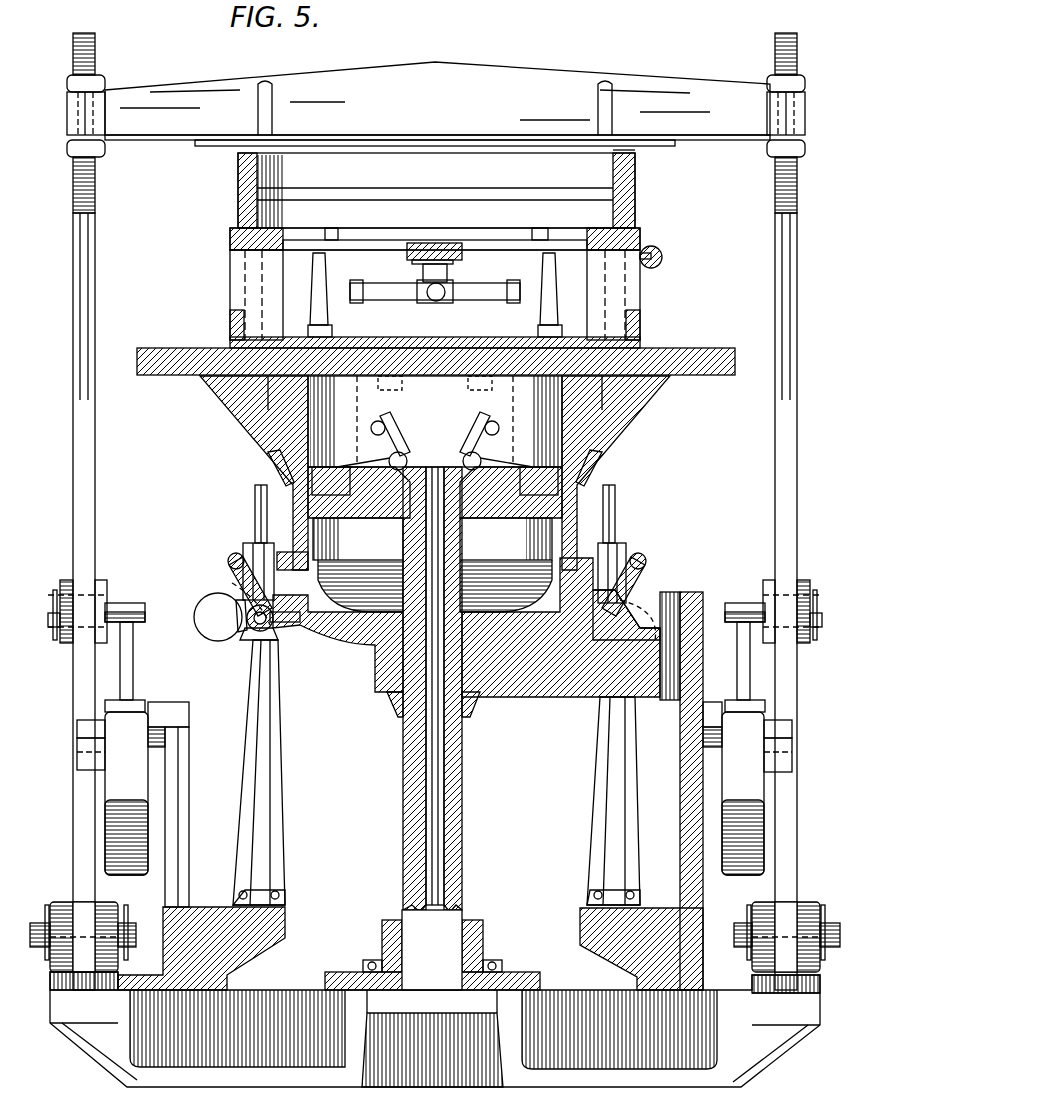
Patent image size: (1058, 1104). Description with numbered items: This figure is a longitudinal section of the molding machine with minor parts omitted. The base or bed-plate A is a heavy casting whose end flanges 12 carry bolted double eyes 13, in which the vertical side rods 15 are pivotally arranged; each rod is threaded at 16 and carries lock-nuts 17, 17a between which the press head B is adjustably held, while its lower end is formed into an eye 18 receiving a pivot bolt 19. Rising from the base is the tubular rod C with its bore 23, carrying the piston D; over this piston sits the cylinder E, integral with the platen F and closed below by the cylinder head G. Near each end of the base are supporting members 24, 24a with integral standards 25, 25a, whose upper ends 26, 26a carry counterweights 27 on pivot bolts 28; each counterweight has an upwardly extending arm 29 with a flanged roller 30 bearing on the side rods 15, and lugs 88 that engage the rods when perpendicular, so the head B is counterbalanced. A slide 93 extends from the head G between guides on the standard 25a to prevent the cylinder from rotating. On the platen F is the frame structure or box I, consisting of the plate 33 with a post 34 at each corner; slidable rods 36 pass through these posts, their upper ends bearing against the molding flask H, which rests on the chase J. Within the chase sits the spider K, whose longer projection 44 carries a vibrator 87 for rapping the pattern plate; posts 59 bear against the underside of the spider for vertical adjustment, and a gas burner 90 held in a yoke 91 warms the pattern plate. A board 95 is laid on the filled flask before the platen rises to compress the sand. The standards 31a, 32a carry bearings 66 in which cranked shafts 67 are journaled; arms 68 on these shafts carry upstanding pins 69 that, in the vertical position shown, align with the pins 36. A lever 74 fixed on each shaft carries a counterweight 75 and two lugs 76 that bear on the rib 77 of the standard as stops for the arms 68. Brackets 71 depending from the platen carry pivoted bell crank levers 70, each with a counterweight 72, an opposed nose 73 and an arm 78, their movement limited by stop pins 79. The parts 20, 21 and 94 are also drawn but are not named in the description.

The laterally projecting flanges 12 is at (50, 1012).
The double eyes 13 is at (58, 902).
The side rods 15 is at (97, 501).
The screw threaded portion 16 is at (99, 50).
The lock-nut 17 is at (107, 81).
The lock-nut 17a is at (108, 153).
The eyes 18 is at (88, 904).
The pivot bolts 19 is at (130, 920).
The pedestal block 20 is at (488, 943).
The bolt 21 is at (365, 964).
The bore 23 is at (432, 821).
The supporting member 24 is at (296, 915).
The supporting member 24a is at (578, 931).
The standard 25 is at (196, 787).
The standard 25a is at (680, 832).
The upper end of standard 26 is at (160, 702).
The upper end of standard 26a is at (708, 700).
The counterweights 27 is at (434, 793).
The pivot bolts 28 is at (82, 712).
The upwardly extending arm 29 is at (128, 655).
The flanged rollers 30 is at (106, 582).
The standard 31a is at (284, 789).
The standard 32a is at (590, 790).
The plate 33 is at (437, 346).
The post 34 is at (228, 283).
The slidable rods 36 is at (256, 396).
The longer projection 44 is at (662, 262).
The posts 59 is at (312, 309).
The bearings 66 is at (240, 606).
The cranked shafts 67 is at (226, 567).
The arms 68 is at (243, 553).
The upstanding pin 69 is at (253, 503).
The bell crank lever 70 is at (296, 494).
The brackets 71 is at (435, 391).
The counterweight 72 is at (266, 459).
The nose 73 is at (538, 540).
The lever 74 is at (374, 668).
The counterweight 75 is at (194, 618).
The lugs 76 is at (284, 624).
The rib 77 is at (262, 691).
The arms 78 is at (462, 428).
The stop pins 79 is at (370, 428).
The vibrator 87 is at (660, 252).
The projecting lugs 88 is at (77, 753).
The gas heater 90 is at (500, 300).
The yoke 91 is at (452, 276).
The slide 93 is at (548, 698).
The wedge 94 is at (688, 600).
The board 95 is at (616, 152).
The base A is at (435, 1094).
The press head B is at (437, 104).
The upstanding rod C is at (400, 786).
The piston D is at (435, 507).
The cylinder E is at (435, 421).
The platen F is at (200, 347).
The cylinder head G is at (373, 658).
The molding flask H is at (436, 190).
The frame structure I is at (347, 319).
The chase J is at (228, 237).
The spider K is at (376, 242).